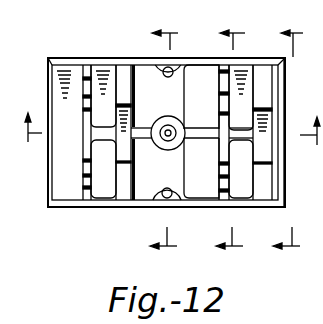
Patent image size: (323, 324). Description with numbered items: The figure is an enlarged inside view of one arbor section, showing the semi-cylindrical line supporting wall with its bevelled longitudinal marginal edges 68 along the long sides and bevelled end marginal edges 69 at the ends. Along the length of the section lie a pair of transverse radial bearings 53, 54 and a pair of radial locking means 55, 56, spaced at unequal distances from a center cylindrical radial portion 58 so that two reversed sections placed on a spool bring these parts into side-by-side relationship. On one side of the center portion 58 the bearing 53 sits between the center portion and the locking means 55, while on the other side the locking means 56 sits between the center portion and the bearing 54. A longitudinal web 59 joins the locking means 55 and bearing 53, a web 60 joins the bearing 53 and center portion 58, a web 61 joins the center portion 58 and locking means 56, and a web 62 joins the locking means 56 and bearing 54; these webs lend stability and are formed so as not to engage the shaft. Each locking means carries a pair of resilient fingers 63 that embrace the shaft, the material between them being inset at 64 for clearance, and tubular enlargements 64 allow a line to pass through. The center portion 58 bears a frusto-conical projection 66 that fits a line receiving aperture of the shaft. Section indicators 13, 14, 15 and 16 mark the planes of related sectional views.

The longitudinal marginal edges 68 is at (72, 64).
The end marginal edges 69 is at (52, 83).
The longitudinal web 59 is at (105, 128).
The radial locking means 55 is at (86, 196).
The transverse radial bearing 53 is at (123, 187).
The web 60 is at (142, 128).
The web 61 is at (201, 138).
The center cylindrical radial portion 58 is at (171, 147).
The frusto-conical projection 66 is at (168, 127).
The tubular enlargements 64 is at (182, 79).
The radial locking means 56 is at (227, 198).
The web 62 is at (240, 132).
The transverse radial bearing 54 is at (263, 184).
The fingers 63 is at (311, 318).
The section line 13 is at (167, 141).
The section line 14 is at (233, 141).
The section line 15 is at (291, 141).
The section line 16 is at (169, 140).